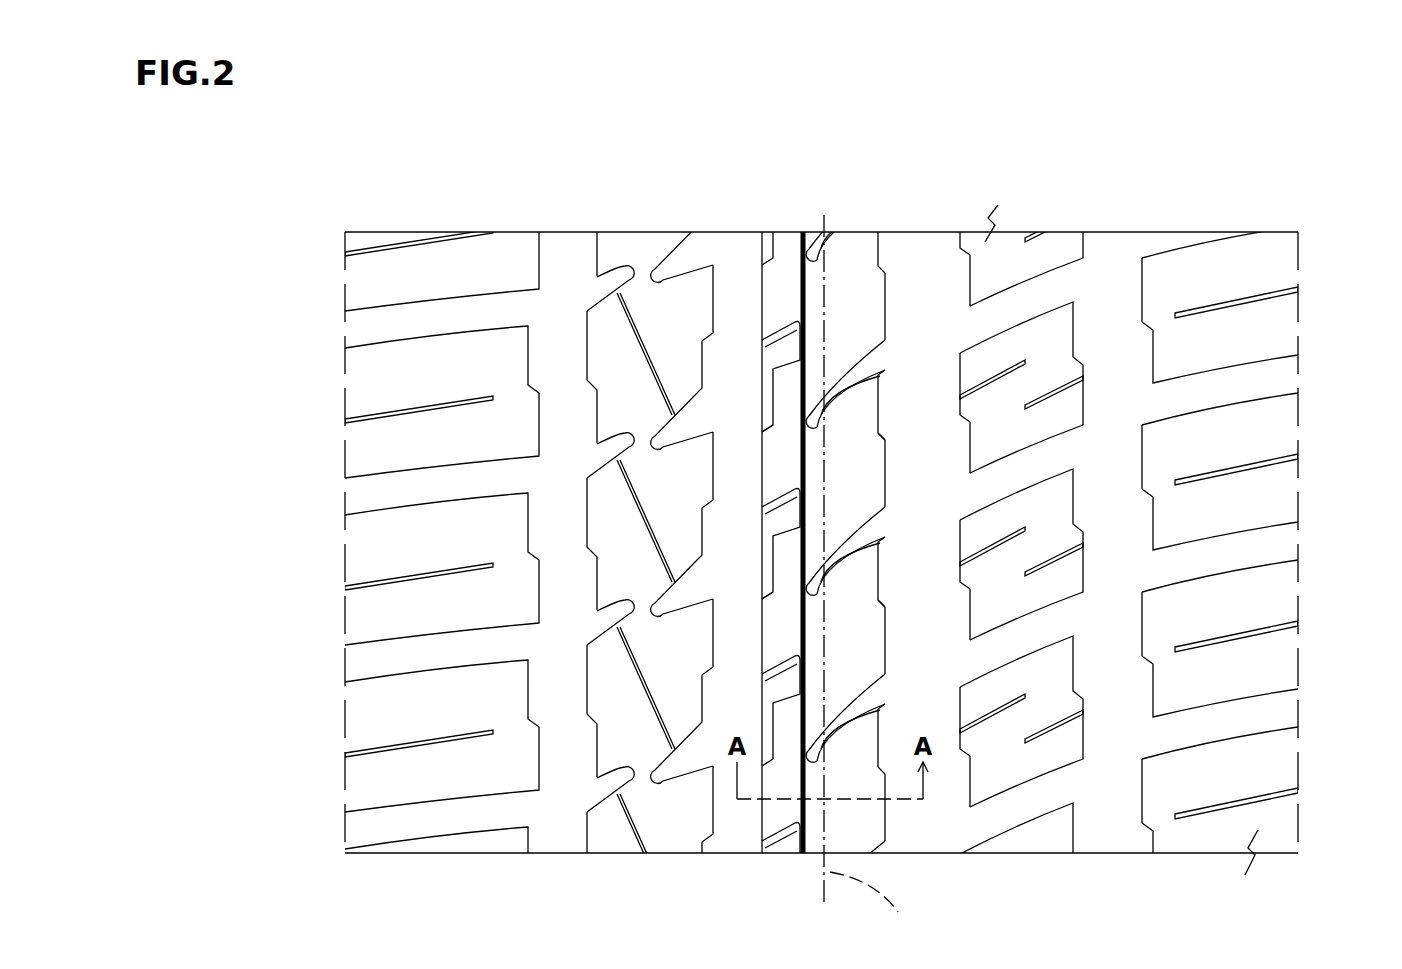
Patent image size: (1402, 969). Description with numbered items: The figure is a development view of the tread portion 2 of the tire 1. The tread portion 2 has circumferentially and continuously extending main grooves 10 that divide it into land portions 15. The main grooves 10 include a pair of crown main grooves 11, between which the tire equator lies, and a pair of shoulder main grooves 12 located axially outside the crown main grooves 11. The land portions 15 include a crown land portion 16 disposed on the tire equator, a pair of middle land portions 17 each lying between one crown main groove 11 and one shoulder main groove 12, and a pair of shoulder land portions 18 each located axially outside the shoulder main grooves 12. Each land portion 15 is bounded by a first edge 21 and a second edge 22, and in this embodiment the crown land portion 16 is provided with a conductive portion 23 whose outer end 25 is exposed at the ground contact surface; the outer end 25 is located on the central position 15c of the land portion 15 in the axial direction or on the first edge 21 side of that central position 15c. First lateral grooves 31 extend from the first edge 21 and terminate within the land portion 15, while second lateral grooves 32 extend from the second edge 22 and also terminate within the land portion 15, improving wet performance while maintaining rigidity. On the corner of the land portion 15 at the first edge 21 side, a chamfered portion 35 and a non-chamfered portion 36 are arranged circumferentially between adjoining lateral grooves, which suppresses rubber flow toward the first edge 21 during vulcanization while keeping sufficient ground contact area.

The tire 1 is at (1245, 216).
The tread portion 2 is at (958, 218).
The main grooves 10 is at (562, 284).
The crown main grooves 11 is at (921, 298).
The shoulder main grooves 12 is at (1112, 298).
The land portions 15 is at (852, 298).
The central position of the land portion 15c is at (873, 580).
The crown land portion 16 is at (881, 572).
The middle land portions 17 is at (641, 300).
The shoulder land portions 18 is at (432, 284).
The first edge 21 is at (762, 473).
The second edge 22 is at (885, 655).
The conductive portion 23 is at (762, 838).
The outer end 25 is at (781, 505).
The first lateral grooves 31 is at (790, 350).
The second lateral grooves 32 is at (870, 532).
The chamfered portion 35 is at (765, 587).
The non-chamfered portion 36 is at (821, 537).